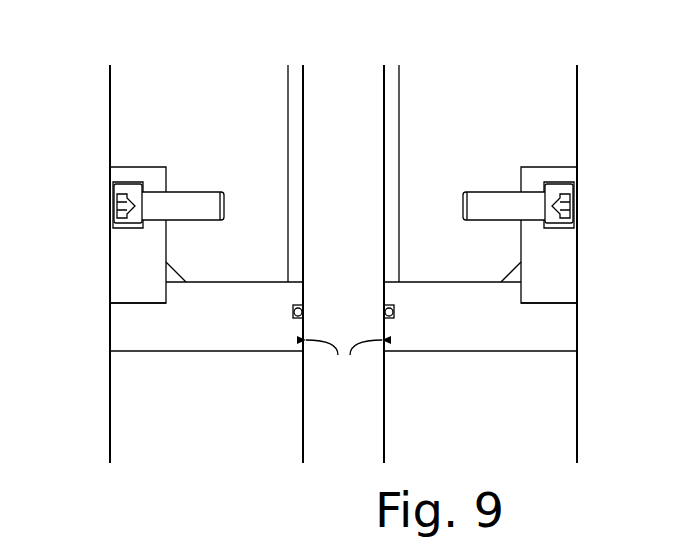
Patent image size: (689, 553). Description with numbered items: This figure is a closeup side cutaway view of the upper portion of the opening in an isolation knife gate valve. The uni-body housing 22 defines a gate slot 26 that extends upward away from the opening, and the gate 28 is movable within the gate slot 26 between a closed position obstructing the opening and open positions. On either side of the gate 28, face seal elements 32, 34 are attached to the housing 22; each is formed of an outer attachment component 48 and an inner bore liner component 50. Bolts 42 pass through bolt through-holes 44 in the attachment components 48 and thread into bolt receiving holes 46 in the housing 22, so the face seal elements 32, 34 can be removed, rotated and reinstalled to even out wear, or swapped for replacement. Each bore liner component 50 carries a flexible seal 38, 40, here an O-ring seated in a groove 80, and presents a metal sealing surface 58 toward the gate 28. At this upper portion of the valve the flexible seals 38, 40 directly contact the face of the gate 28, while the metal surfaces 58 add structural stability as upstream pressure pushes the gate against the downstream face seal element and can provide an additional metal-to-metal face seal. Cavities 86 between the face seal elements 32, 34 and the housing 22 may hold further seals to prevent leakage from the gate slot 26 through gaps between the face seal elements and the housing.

The housing 22 is at (566, 97).
The gate slot 26 is at (400, 87).
The gate 28 is at (303, 88).
The face seal element 32 is at (112, 332).
The face seal element 34 is at (577, 325).
The flexible seal 38 is at (297, 318).
The flexible seal 40 is at (392, 315).
The bolt 42 is at (125, 203).
The bolt through-hole 44 is at (112, 183).
The threaded bolt receiving hole 46 is at (220, 193).
The attachment component 48 is at (110, 253).
The bore liner component 50 is at (183, 351).
The metal sealing surface 58 is at (344, 360).
The groove 80 is at (294, 309).
The cavity 86 is at (170, 277).